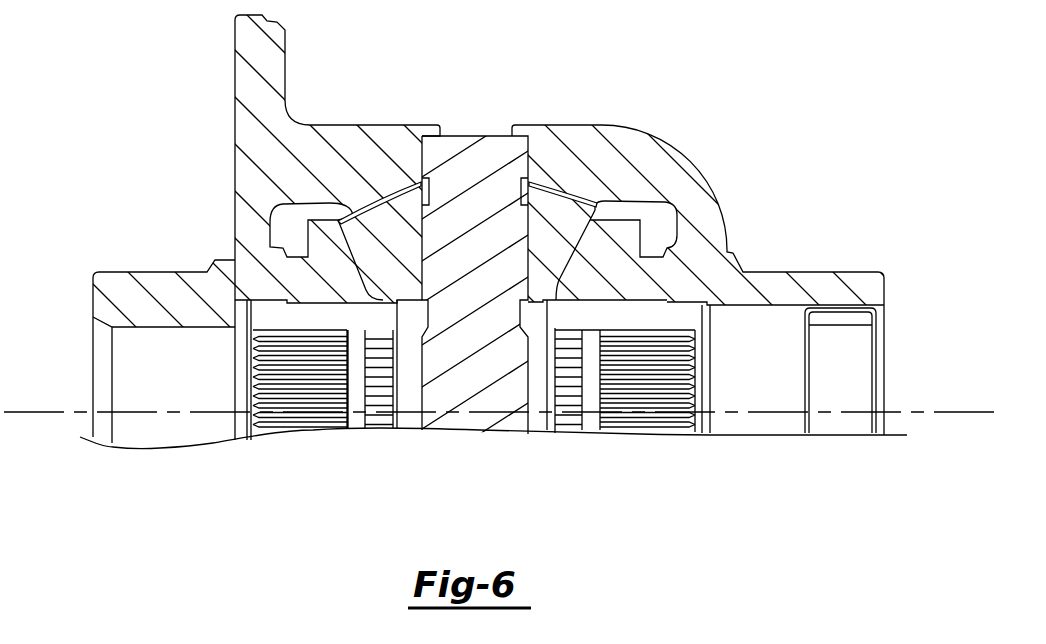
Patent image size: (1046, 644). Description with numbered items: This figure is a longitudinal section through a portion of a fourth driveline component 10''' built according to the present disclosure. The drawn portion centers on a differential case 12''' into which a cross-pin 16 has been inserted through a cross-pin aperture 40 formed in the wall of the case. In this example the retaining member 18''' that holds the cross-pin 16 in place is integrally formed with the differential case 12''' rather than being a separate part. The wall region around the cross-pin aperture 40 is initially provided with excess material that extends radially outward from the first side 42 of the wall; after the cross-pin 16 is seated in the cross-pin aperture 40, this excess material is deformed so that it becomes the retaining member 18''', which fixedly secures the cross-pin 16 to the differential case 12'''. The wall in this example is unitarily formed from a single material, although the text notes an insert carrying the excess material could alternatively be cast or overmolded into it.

The driveline component 10''' is at (502, 229).
The differential case 12''' is at (488, 284).
The cross-pin 16 is at (442, 397).
The retaining member 18''' is at (473, 172).
The cross-pin aperture 40 is at (529, 162).
The first side 42 is at (393, 140).